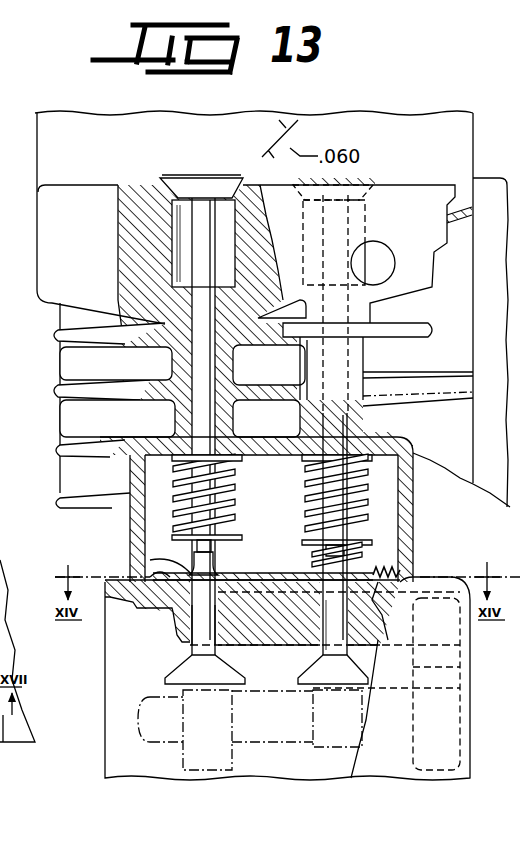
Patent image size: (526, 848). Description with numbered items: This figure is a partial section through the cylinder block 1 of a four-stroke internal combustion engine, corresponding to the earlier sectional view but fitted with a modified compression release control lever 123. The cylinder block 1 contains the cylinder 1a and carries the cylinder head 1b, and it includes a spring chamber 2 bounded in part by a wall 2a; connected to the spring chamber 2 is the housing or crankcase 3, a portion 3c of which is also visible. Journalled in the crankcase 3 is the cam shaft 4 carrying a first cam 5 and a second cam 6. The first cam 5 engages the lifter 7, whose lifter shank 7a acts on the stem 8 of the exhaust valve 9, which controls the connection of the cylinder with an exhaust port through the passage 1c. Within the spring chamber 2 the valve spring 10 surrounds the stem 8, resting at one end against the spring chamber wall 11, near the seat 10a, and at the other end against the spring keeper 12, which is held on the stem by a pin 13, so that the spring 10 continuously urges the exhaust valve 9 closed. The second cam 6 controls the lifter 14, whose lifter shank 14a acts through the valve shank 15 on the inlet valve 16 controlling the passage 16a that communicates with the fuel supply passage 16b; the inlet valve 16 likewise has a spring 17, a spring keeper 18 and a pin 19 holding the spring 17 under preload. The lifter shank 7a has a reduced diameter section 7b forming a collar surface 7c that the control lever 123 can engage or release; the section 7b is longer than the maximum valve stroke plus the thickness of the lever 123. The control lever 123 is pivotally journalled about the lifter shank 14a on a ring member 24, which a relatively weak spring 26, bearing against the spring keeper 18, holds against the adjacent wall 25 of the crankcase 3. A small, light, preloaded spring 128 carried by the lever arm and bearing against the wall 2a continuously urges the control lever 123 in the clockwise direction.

The cylinder block 1 is at (36, 266).
The cylinder 1a is at (70, 418).
The cylinder head 1b is at (48, 163).
The passage 1c is at (185, 258).
The spring chamber 2 is at (140, 531).
The wall of spring chamber 2a is at (0, 565).
The housing or crankcase 3 is at (470, 666).
The crankcase wall portion 3c is at (11, 618).
The cam shaft 4 is at (150, 727).
The first cam 5 is at (190, 752).
The second cam 6 is at (325, 745).
The lifter 7 is at (190, 672).
The lifter shank 7a is at (195, 628).
The reduced diameter section 7b is at (150, 560).
The collar surface 7c is at (222, 578).
The stem of exhaust valve 8 is at (175, 474).
The exhaust valve 9 is at (180, 185).
The valve spring 10 is at (228, 486).
The spring seat 10a is at (165, 445).
The spring chamber wall 11 is at (280, 450).
The spring keeper 12 is at (233, 522).
The pin 13 is at (222, 536).
The lifter 14 is at (322, 672).
The lifter shank 14a is at (347, 655).
The valve shank 15 is at (335, 428).
The inlet valve 16 is at (345, 195).
The passage 16a is at (360, 224).
The fuel supply passage 16b is at (378, 260).
The spring 17 is at (380, 485).
The spring keeper 18 is at (370, 530).
The pin 19 is at (375, 546).
The ring member 24 is at (295, 566).
The wall of crankcase 25 is at (152, 575).
The spring 26 is at (402, 568).
The control lever 123 is at (168, 574).
The preloaded spring 128 is at (388, 588).